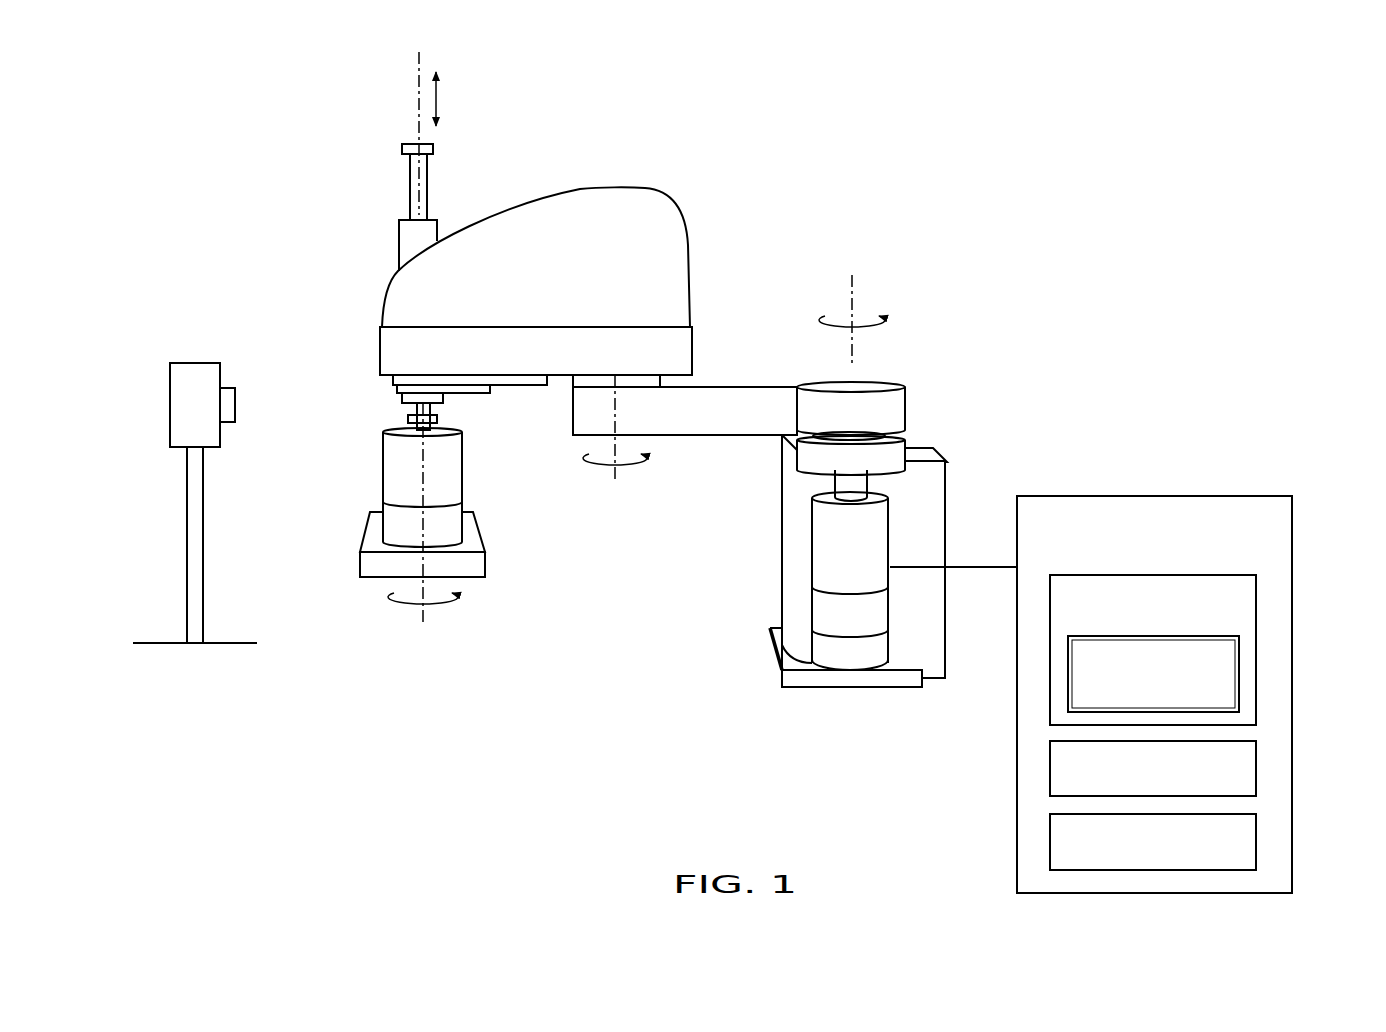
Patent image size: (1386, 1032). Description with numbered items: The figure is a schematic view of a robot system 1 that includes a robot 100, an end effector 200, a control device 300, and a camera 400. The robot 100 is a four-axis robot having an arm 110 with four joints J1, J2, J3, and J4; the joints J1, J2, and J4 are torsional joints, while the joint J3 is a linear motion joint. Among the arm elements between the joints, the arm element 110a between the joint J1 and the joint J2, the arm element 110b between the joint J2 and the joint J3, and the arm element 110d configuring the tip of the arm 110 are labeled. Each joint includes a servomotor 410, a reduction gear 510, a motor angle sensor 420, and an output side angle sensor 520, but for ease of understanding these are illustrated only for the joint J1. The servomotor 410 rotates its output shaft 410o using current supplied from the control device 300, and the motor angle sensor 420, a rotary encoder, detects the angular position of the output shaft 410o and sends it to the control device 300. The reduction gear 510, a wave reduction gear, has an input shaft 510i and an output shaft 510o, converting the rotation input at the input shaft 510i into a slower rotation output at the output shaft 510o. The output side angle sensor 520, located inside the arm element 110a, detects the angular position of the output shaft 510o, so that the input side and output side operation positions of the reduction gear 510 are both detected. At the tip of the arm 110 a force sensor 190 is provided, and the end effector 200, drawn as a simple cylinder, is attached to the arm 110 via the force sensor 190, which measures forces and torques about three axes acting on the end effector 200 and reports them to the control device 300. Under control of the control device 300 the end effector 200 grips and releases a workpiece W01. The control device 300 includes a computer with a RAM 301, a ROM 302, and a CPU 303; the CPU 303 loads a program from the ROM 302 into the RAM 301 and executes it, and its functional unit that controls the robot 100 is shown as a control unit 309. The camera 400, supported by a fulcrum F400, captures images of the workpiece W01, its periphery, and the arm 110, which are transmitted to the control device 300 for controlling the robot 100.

The robot system 1 is at (1013, 237).
The robot 100 is at (553, 653).
The arm 110 is at (708, 199).
The arm element 110a is at (762, 387).
The arm element 110b is at (386, 306).
The arm element 110d is at (417, 423).
The force sensor 190 is at (383, 467).
The end effector 200 is at (383, 520).
The workpiece W01 is at (485, 567).
The joint J1 is at (853, 289).
The joint J2 is at (613, 474).
The joint J3 is at (419, 106).
The joint J4 is at (423, 612).
The control device 300 is at (1250, 494).
The RAM 301 is at (1257, 766).
The ROM 302 is at (1257, 839).
The CPU 303 is at (1257, 618).
The control unit 309 is at (1239, 677).
The camera 400 is at (170, 408).
The fulcrum F400 is at (187, 547).
The servomotor 410 is at (890, 525).
The output shaft 410o is at (837, 485).
The motor angle sensor 420 is at (890, 603).
The reduction gear 510 is at (905, 442).
The input shaft 510i is at (746, 491).
The output shaft 510o is at (833, 439).
The output side angle sensor 520 is at (905, 405).